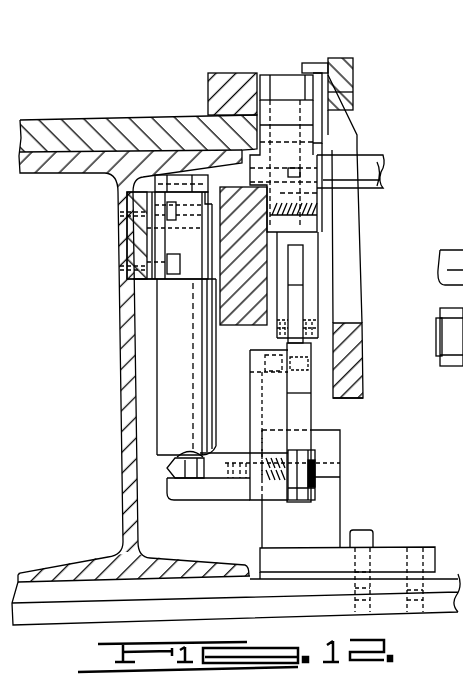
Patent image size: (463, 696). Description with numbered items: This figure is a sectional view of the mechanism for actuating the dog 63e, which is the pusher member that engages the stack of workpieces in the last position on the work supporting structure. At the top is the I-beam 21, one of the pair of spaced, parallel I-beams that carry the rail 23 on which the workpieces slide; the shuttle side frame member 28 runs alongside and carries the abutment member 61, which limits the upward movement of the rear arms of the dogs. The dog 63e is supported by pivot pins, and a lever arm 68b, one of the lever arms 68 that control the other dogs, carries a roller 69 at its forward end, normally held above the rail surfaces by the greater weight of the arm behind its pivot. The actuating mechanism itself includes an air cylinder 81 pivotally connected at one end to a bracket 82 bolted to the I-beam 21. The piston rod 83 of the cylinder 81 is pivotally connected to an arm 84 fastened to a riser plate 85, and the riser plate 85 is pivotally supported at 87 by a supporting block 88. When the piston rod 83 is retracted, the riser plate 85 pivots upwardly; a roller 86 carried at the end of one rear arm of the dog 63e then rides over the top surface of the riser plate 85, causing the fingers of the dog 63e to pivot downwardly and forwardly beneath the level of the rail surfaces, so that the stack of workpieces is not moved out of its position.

The I-beam 21 is at (122, 333).
The rail 23 is at (222, 88).
The side frame member 28 is at (227, 319).
The abutment member 61 is at (292, 152).
The dog 63e is at (282, 75).
The lever arm 68 is at (449, 343).
The lever arm 68b is at (348, 228).
The roller 69 is at (343, 62).
The air cylinder 81 is at (177, 393).
The bracket 82 is at (185, 234).
The piston rod 83 is at (173, 458).
The arm 84 is at (210, 490).
The riser plate 85 is at (315, 422).
The roller 86 is at (297, 315).
The pivot 87 is at (330, 463).
The supporting block 88 is at (328, 510).